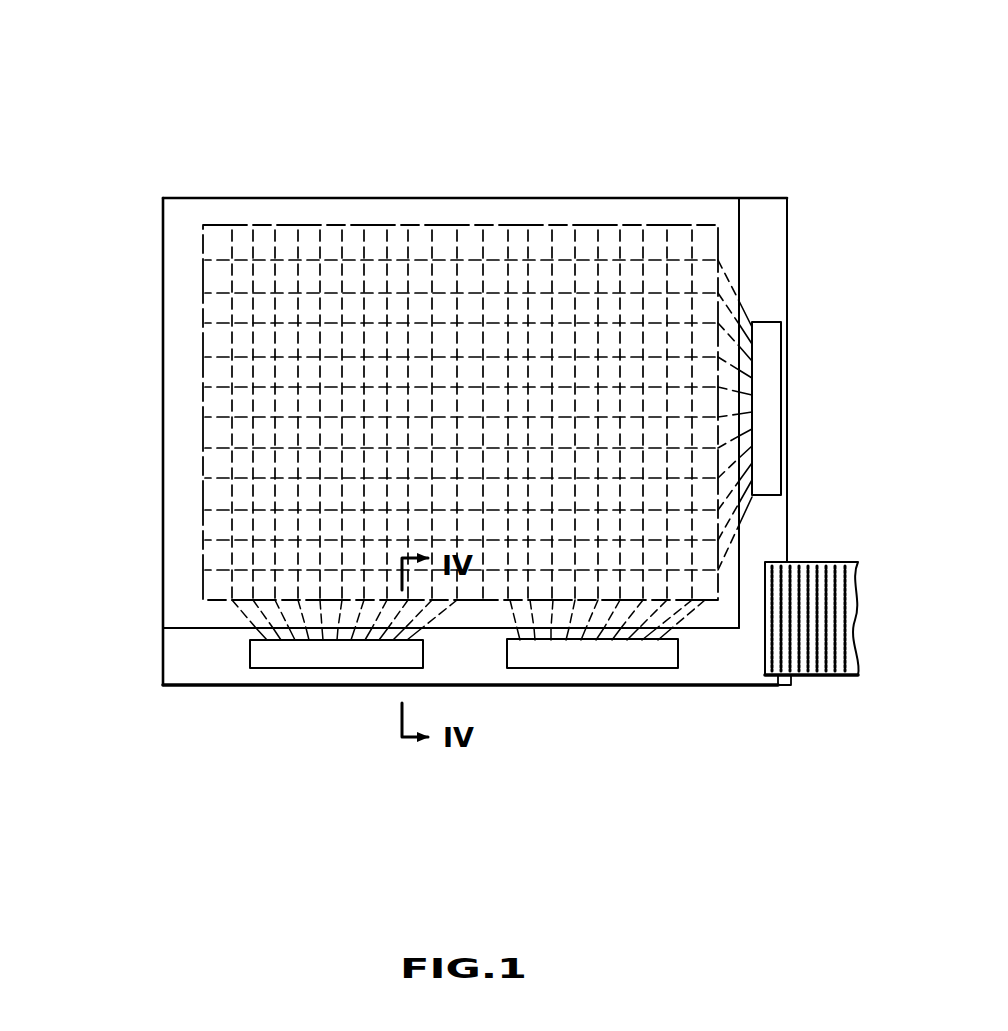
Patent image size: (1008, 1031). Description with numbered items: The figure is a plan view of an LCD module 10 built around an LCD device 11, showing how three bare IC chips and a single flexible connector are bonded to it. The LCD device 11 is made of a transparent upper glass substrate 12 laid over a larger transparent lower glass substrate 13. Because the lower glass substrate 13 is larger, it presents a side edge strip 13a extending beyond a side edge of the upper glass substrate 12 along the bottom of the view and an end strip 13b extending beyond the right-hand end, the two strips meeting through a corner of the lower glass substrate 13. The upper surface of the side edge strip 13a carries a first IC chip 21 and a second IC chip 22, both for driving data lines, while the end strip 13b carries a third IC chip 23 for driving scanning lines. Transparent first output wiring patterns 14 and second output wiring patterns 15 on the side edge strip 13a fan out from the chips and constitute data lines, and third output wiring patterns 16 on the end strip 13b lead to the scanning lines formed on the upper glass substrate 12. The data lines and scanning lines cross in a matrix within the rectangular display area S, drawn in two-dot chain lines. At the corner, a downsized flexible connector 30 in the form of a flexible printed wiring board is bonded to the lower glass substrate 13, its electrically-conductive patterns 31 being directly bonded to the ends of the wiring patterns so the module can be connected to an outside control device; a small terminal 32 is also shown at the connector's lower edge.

The LCD module 10 is at (548, 190).
The LCD device 11 is at (156, 194).
The upper glass substrate 12 is at (177, 280).
The lower glass substrate 13 is at (229, 688).
The side edge strip 13a is at (365, 677).
The end strip 13b is at (776, 300).
The first output wiring patterns 14 is at (256, 632).
The second output wiring patterns 15 is at (507, 635).
The third output wiring patterns 16 is at (750, 311).
The first IC chip 21 is at (307, 655).
The second IC chip 22 is at (592, 655).
The third IC chip 23 is at (775, 392).
The flexible connector 30 is at (824, 680).
The electrically-conductive patterns 31 is at (819, 576).
The connector terminal 32 is at (779, 682).
The display area S is at (352, 230).